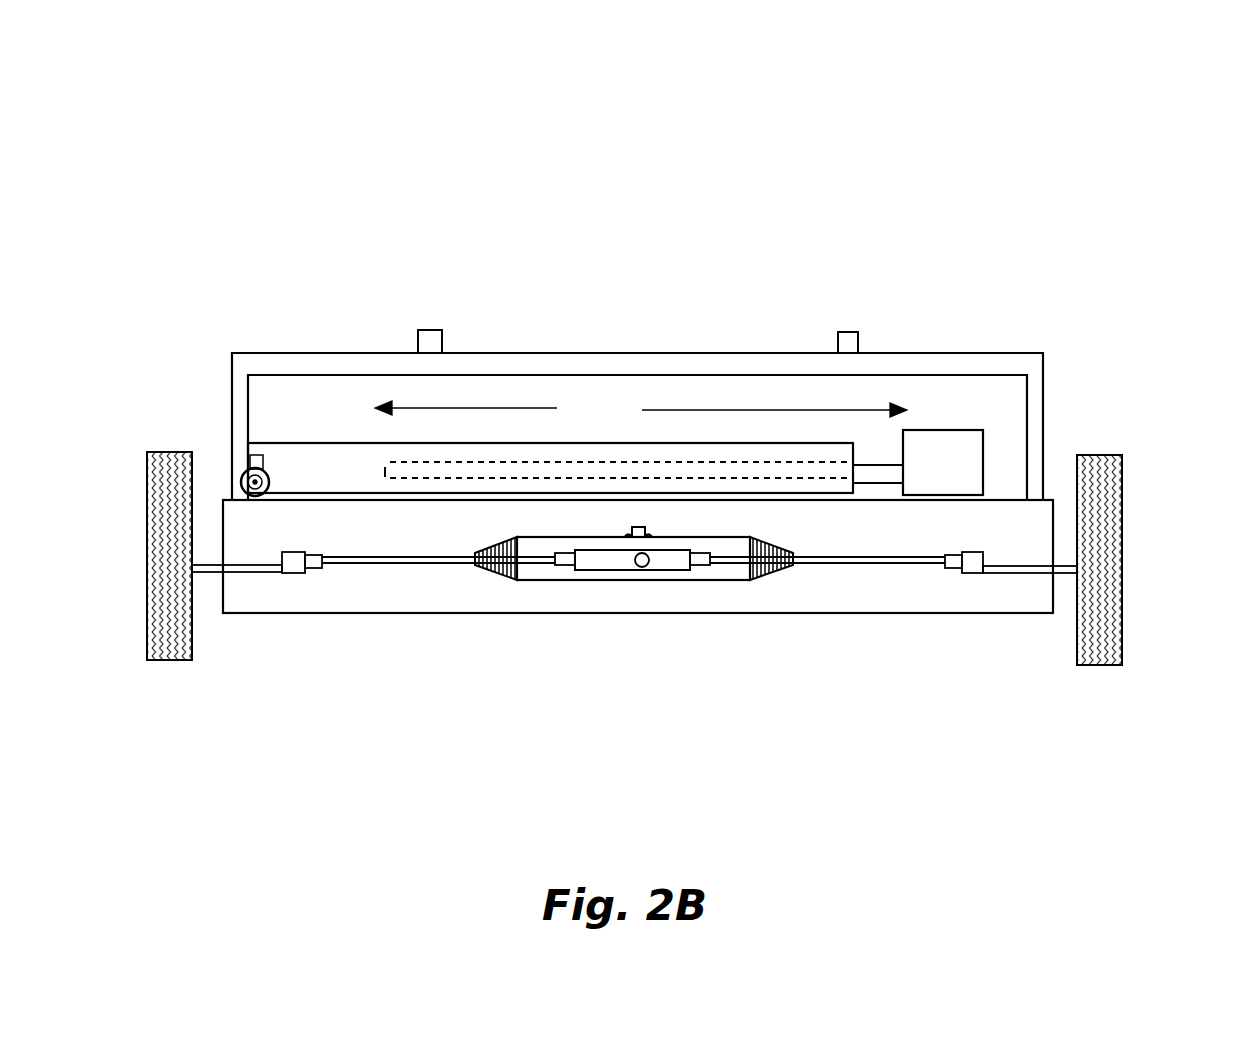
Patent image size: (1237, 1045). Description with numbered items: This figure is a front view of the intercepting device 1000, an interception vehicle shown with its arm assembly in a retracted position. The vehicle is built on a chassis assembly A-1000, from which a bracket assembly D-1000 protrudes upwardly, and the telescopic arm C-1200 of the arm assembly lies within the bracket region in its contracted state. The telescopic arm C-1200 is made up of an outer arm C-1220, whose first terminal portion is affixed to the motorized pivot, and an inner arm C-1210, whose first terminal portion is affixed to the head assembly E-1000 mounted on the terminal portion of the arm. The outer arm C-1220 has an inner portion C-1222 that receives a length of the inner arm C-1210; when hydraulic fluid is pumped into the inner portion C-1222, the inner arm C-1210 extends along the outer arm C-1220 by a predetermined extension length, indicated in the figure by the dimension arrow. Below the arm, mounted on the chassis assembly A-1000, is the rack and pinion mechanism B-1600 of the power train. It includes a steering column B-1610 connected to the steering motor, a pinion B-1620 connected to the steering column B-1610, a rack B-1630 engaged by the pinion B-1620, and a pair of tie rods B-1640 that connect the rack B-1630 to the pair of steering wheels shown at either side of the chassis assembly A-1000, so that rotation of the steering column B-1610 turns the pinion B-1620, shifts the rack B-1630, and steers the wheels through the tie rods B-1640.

The intercepting device 1000 is at (1112, 138).
The chassis assembly A-1000 is at (222, 500).
The bracket assembly D-1000 is at (318, 313).
The head assembly E-1000 is at (995, 427).
The telescopic arm C-1200 is at (1027, 247).
The outer arm C-1220 is at (675, 443).
The inner portion C-1222 is at (755, 462).
The inner arm C-1210 is at (870, 464).
The rack and pinion mechanism B-1600 is at (837, 717).
The steering column B-1610 is at (645, 540).
The pinion B-1620 is at (640, 570).
The rack B-1630 is at (583, 567).
The tie rods B-1640 is at (463, 565).